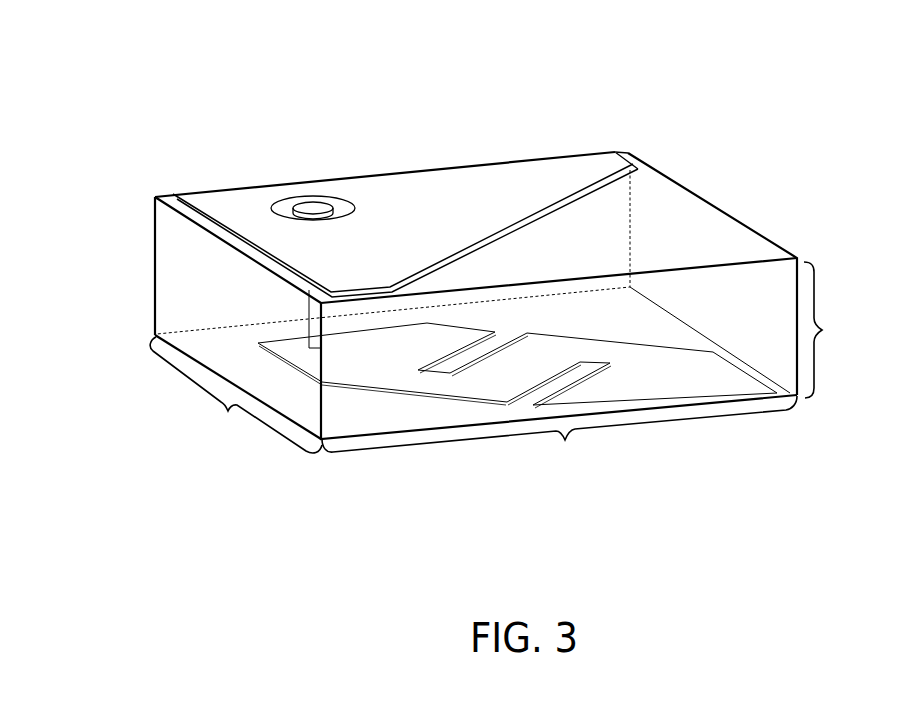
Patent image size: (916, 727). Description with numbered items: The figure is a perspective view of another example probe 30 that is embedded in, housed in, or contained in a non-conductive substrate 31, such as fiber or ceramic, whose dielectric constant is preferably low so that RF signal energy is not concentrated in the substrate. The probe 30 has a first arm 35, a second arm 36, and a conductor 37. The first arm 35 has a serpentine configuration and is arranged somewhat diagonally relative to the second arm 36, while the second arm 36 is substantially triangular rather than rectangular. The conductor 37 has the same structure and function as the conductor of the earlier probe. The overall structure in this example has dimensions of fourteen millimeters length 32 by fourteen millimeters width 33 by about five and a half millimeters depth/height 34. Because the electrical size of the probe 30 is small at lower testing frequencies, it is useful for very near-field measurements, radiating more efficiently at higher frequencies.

The probe 30 is at (112, 108).
The non-conductive substrate 31 is at (160, 284).
The length 32 is at (402, 450).
The width 33 is at (280, 438).
The depth/height 34 is at (818, 368).
The first arm 35 is at (707, 386).
The second arm 36 is at (428, 186).
The conductor 37 is at (313, 315).